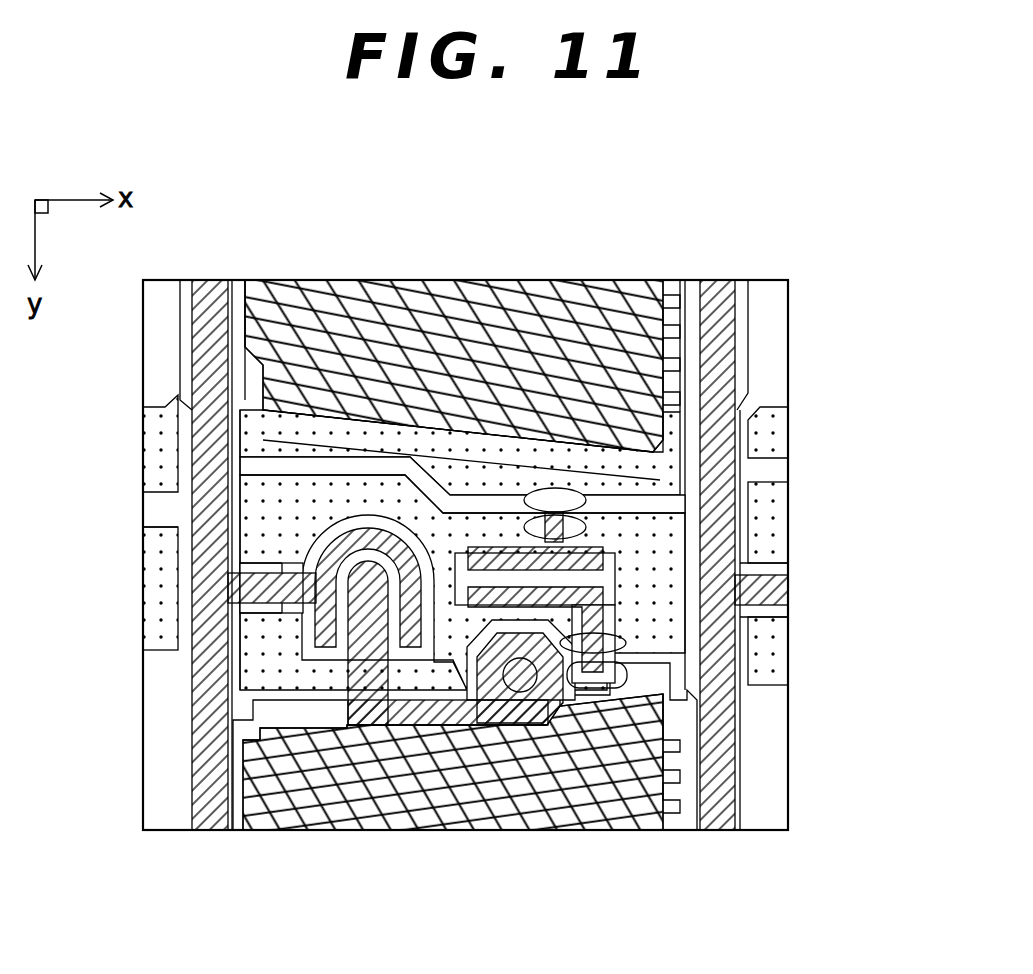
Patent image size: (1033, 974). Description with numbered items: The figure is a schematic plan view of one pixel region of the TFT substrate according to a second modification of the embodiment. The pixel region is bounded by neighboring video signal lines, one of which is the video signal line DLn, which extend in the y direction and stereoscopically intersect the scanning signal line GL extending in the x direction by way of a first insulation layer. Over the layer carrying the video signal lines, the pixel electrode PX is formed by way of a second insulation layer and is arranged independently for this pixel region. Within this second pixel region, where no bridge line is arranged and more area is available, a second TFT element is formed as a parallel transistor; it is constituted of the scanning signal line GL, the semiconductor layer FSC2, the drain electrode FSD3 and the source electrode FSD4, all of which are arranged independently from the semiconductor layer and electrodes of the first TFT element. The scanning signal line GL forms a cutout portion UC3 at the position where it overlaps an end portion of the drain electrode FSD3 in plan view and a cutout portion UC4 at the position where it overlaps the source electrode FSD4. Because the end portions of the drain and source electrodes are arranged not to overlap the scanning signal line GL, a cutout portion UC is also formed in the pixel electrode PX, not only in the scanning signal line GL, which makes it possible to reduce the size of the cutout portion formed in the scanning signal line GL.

The video signal line DLn is at (210, 305).
The drain electrode FSD3 is at (482, 547).
The source electrode FSD4 is at (530, 575).
The semiconductor layer FSC2 is at (470, 578).
The cutout portion UC is at (557, 490).
The cutout portion UC3 is at (588, 530).
The cutout portion UC4 is at (620, 645).
The scanning signal line GL is at (655, 585).
The pixel electrode PX is at (645, 680).